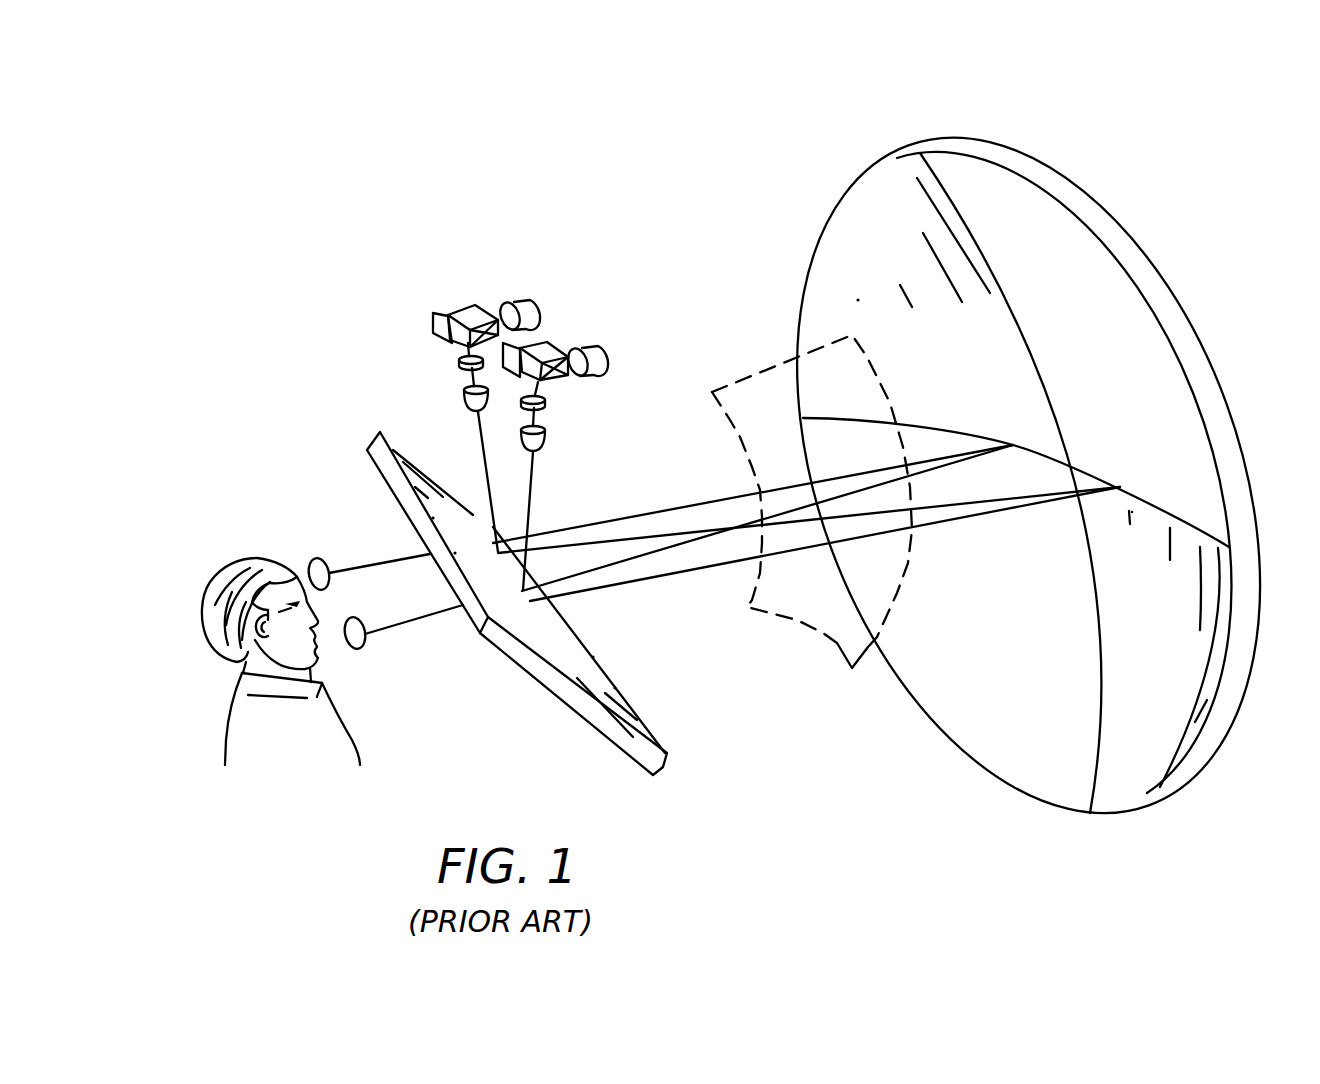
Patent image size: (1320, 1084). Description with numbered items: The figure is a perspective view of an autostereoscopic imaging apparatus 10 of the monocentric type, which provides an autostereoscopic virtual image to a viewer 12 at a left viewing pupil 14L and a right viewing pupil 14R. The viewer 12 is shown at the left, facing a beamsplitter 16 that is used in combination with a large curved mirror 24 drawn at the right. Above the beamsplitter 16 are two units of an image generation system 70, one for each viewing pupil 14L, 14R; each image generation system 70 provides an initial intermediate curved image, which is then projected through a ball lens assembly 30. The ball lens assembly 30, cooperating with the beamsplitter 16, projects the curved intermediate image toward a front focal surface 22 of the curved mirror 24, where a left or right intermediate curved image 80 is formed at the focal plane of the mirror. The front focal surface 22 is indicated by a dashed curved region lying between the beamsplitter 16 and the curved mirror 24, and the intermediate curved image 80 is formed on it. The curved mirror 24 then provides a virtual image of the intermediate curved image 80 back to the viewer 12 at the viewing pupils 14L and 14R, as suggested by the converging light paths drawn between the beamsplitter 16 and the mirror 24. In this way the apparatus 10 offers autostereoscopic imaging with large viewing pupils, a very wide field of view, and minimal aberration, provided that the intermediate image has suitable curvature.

The autostereoscopic imaging apparatus 10 is at (353, 211).
The viewer 12 is at (221, 570).
The left viewing pupil 14L is at (317, 558).
The right viewing pupil 14R is at (368, 636).
The beamsplitter 16 is at (663, 760).
The front focal surface 22 is at (772, 503).
The curved mirror 24 is at (994, 137).
The ball lens assembly 30 is at (463, 392).
The image generation system 70 is at (537, 277).
The intermediate curved image 80 is at (852, 668).